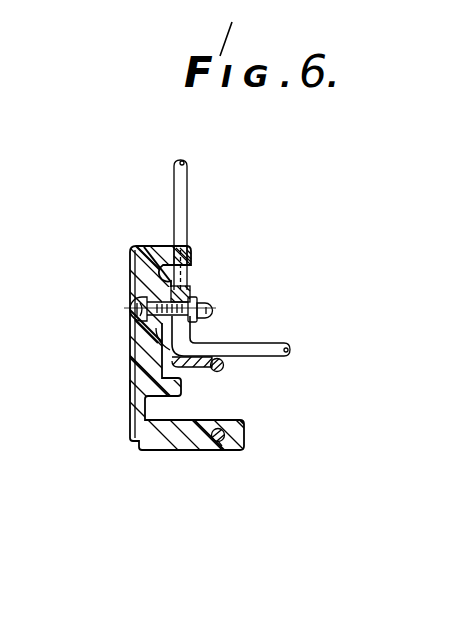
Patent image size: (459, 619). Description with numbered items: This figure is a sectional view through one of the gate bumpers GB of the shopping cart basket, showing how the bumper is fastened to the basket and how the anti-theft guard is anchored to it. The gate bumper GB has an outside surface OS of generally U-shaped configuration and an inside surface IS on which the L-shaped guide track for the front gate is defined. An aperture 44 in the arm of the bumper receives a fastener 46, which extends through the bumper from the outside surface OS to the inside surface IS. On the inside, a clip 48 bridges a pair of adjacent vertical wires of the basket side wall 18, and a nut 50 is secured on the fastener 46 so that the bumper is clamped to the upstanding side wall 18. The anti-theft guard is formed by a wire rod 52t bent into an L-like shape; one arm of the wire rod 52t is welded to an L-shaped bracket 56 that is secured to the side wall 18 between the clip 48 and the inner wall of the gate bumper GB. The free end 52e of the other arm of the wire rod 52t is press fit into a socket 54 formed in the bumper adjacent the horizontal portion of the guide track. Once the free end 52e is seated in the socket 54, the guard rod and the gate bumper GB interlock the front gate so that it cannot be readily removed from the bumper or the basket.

The side wall 18 is at (176, 175).
The inside surface IS is at (192, 254).
The aperture 44 is at (130, 272).
The clip 48 is at (192, 291).
The fastener 46 is at (132, 308).
The nut 50 is at (213, 311).
The L-shaped bracket 56 is at (130, 356).
The outside surface OS is at (130, 390).
The gate bumper GB is at (114, 427).
The wire rod 52t is at (224, 366).
The socket 54 is at (225, 434).
The free end 52e is at (223, 441).